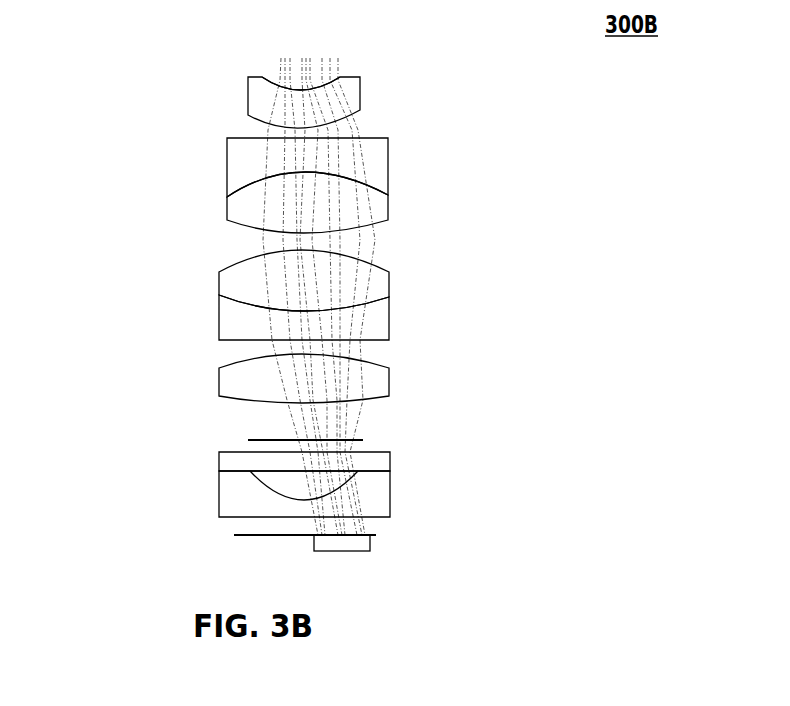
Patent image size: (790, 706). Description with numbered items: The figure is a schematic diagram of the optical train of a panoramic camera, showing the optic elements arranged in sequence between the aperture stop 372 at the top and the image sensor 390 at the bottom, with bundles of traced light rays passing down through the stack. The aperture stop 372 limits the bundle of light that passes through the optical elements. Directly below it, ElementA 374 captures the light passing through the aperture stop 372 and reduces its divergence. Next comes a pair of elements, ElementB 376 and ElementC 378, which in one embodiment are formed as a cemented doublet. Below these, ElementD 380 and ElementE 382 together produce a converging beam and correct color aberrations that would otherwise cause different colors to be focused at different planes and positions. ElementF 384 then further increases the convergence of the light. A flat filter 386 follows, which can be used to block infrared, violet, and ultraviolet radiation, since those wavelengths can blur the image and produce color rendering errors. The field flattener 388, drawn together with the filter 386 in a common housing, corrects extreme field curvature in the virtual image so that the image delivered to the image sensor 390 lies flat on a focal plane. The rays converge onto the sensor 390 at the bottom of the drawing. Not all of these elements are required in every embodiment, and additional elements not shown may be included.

The aperture stop 372 is at (280, 81).
The ElementA 374 is at (258, 102).
The ElementB 376 is at (240, 165).
The ElementC 378 is at (248, 200).
The ElementD 380 is at (232, 282).
The ElementE 382 is at (232, 327).
The ElementF 384 is at (232, 380).
The flat filter 386 is at (236, 461).
The field flattener 388 is at (240, 507).
The image sensor 390 is at (337, 540).